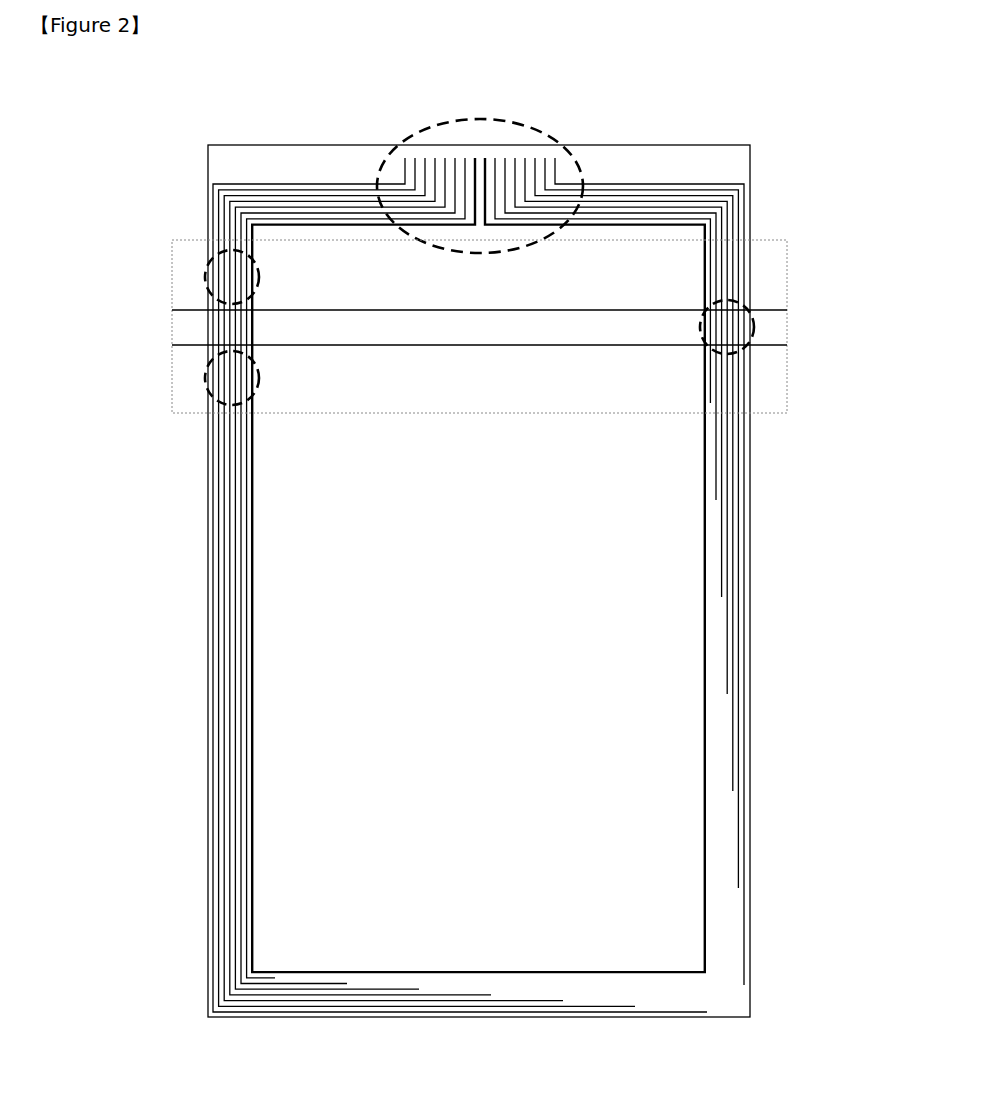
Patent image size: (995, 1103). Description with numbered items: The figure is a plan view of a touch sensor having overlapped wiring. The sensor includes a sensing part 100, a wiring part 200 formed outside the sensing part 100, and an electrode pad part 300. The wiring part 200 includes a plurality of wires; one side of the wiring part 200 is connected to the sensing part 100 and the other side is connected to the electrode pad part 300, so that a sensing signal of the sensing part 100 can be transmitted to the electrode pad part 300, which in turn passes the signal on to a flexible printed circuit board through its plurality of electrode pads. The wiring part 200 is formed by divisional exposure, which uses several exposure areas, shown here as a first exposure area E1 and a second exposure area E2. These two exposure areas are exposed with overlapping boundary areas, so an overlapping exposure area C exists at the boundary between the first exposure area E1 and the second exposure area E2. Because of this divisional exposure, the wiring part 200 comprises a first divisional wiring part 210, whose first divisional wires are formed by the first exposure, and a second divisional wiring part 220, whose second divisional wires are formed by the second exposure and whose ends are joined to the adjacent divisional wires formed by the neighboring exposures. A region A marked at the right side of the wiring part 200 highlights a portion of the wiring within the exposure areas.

The sensing part 100 is at (290, 778).
The wiring part 200 is at (215, 690).
The first divisional wiring part 210 is at (205, 277).
The second divisional wiring part 220 is at (205, 378).
The electrode pad part 300 is at (521, 120).
The region A is at (755, 327).
The overlapping exposure area C is at (160, 312).
The first exposure area E1 is at (790, 276).
The second exposure area E2 is at (790, 378).